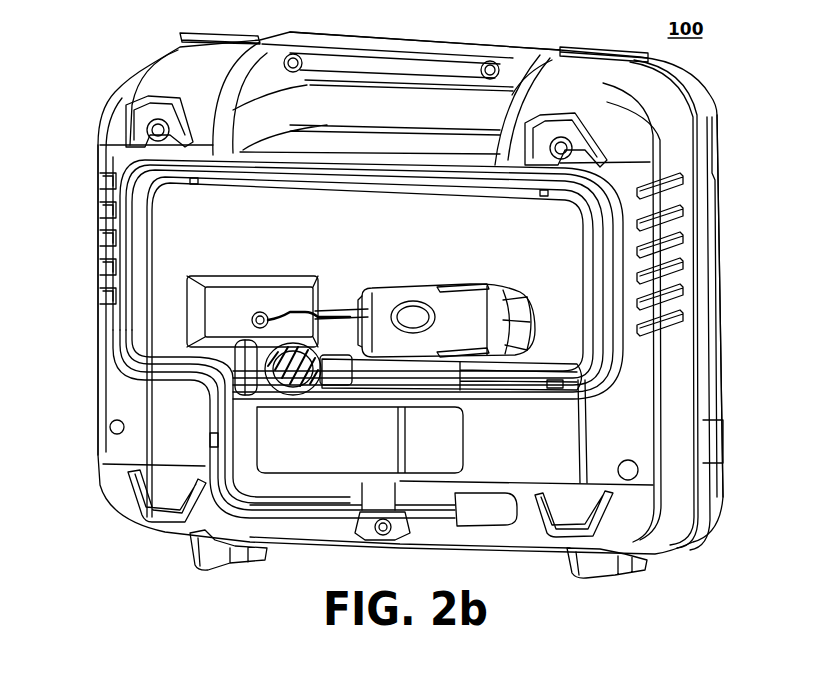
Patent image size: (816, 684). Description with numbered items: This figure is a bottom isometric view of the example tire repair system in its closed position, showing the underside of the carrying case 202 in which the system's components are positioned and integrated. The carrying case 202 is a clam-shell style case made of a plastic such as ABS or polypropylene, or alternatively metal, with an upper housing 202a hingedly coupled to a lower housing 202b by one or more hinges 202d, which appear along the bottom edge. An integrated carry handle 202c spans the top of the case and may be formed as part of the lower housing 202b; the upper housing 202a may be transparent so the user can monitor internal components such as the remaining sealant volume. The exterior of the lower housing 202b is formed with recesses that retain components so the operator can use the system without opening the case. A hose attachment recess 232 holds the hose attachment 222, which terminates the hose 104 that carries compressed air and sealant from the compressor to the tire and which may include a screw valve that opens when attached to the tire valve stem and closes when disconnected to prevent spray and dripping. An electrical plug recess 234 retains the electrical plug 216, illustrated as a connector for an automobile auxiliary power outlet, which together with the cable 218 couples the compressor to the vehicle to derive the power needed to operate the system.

The carrying case 202 is at (83, 98).
The upper housing 202a is at (722, 378).
The lower housing 202b is at (99, 368).
The integrated carry handle 202c is at (467, 36).
The hinges 202d is at (190, 545).
The hose 104 is at (593, 250).
The electrical plug 216 is at (410, 283).
The cable 218 is at (296, 312).
The hose attachment 222 is at (313, 383).
The hose attachment recess 232 is at (357, 387).
The electrical plug recess 234 is at (463, 283).